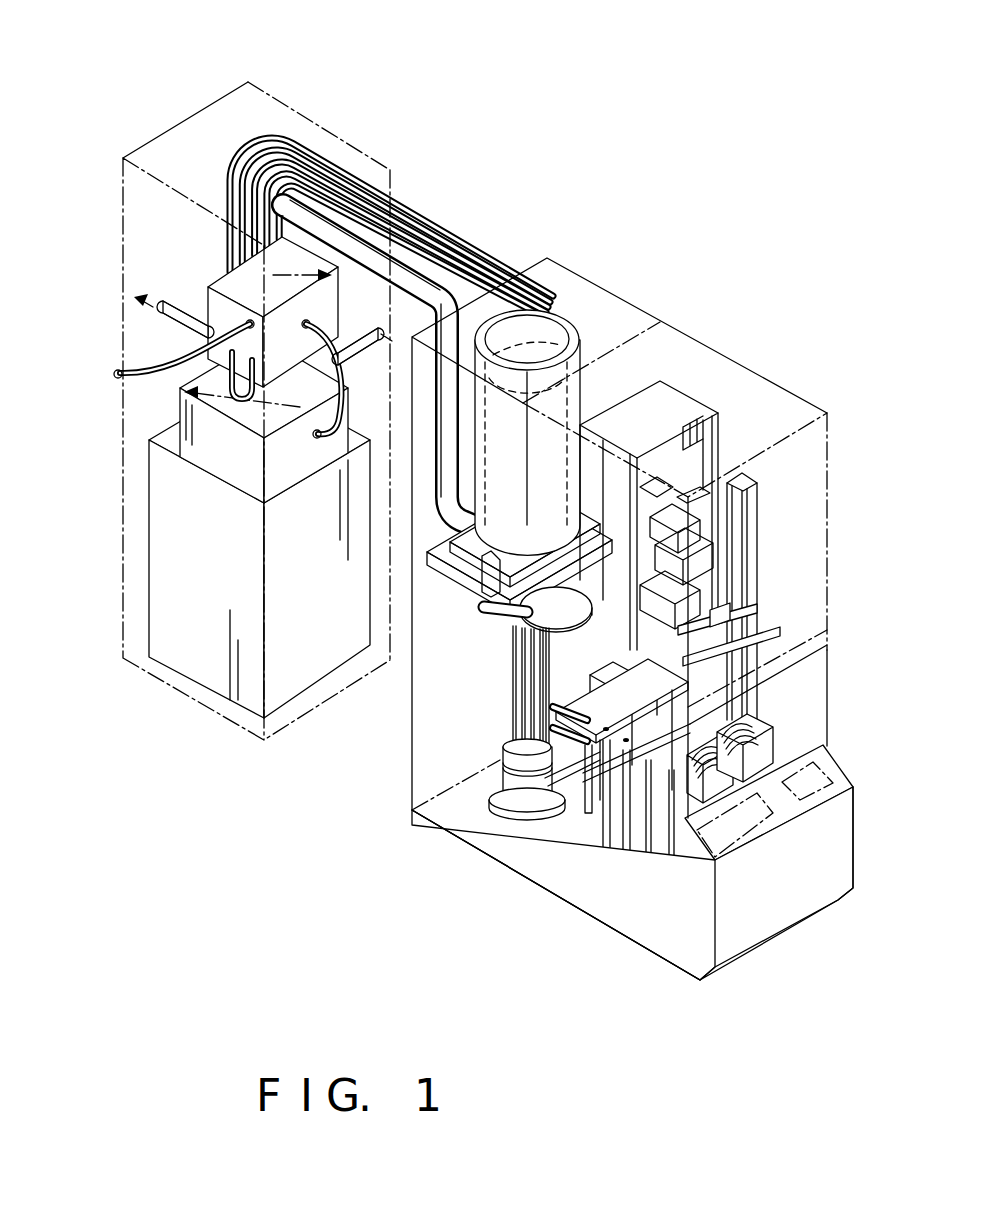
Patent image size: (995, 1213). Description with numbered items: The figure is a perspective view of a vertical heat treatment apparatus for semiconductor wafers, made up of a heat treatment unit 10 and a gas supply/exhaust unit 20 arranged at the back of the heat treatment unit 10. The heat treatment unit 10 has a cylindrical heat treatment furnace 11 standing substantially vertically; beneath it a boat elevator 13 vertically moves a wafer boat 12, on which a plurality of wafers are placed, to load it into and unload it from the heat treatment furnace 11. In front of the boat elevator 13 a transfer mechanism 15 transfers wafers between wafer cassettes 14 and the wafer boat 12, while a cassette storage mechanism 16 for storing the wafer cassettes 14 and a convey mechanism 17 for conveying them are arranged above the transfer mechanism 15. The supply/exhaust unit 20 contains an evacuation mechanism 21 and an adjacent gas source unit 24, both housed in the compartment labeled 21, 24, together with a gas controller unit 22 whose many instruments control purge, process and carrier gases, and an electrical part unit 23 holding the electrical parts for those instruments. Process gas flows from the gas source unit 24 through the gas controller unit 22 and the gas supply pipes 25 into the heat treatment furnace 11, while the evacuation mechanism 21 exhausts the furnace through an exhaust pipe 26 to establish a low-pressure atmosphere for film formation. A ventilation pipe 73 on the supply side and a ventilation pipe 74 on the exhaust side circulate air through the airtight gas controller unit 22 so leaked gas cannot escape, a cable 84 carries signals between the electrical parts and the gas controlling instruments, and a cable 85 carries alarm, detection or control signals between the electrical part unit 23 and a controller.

The heat treatment unit 10 is at (664, 284).
The heat treatment furnace 11 is at (572, 330).
The wafer boat 12 is at (513, 673).
The boat elevator 13 is at (505, 810).
The wafer cassettes 14 is at (800, 743).
The transfer mechanism 15 is at (563, 803).
The cassette storage mechanism 16 is at (697, 413).
The convey mechanism 17 is at (768, 548).
The gas supply/exhaust unit 20 is at (352, 108).
The evacuation mechanism 21 is at (209, 547).
The gas source unit 24 is at (160, 545).
The gas controller unit 22 is at (200, 452).
The electrical part unit 23 is at (213, 305).
The gas supply pipes 25 is at (455, 240).
The exhaust pipe 26 is at (423, 290).
The ventilation pipe on a supply side 73 is at (357, 363).
The ventilation pipe on an exhaust side 74 is at (168, 333).
The cable 84 is at (333, 342).
The cable 85 is at (148, 387).